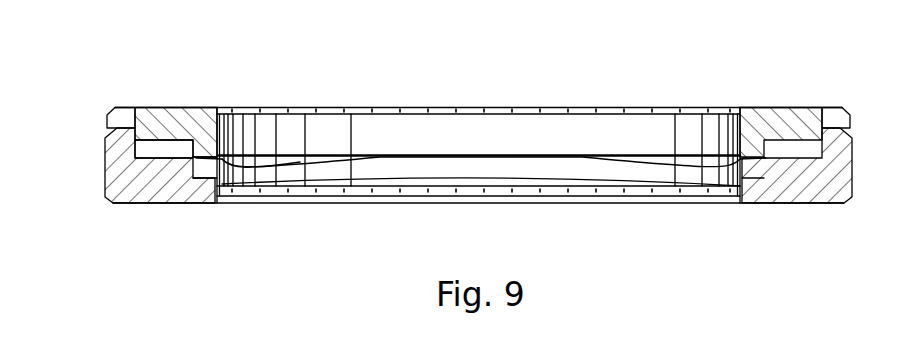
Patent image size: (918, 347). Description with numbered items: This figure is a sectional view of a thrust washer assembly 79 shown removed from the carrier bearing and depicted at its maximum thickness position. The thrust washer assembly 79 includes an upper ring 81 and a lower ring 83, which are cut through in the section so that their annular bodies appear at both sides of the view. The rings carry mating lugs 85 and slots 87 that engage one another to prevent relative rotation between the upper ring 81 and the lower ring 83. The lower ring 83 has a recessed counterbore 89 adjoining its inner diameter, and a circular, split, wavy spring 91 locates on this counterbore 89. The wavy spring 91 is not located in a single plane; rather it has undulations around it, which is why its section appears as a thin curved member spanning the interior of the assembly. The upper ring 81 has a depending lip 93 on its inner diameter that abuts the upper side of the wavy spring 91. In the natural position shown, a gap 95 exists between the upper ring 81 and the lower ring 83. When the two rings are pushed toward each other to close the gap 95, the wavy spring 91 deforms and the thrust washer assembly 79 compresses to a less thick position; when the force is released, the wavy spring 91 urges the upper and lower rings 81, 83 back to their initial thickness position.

The thrust washer assembly 79 is at (215, 87).
The upper ring 81 is at (769, 107).
The lower ring 83 is at (799, 204).
The lug 85 is at (106, 147).
The slot 87 is at (128, 118).
The recessed counterbore 89 is at (209, 178).
The wavy spring 91 is at (224, 162).
The depending lip 93 is at (766, 158).
The gap 95 is at (155, 150).